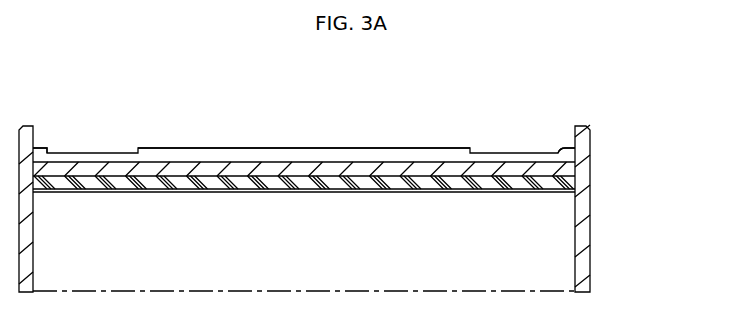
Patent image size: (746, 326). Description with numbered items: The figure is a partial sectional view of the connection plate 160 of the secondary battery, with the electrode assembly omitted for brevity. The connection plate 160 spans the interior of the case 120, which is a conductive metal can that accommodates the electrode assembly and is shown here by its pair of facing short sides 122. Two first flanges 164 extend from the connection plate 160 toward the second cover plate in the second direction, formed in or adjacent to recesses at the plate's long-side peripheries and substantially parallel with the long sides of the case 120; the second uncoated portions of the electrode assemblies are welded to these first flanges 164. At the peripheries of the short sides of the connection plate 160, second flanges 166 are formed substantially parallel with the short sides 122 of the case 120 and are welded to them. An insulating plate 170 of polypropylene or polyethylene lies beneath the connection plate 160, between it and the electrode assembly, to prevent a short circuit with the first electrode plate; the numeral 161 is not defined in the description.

The case 120 is at (355, 204).
The short sides 122 is at (587, 228).
The connection plate 160 is at (75, 145).
The plate layer 161 is at (122, 160).
The first flanges 164 is at (279, 152).
The second flanges 166 is at (568, 150).
The insulating plate 170 is at (483, 182).